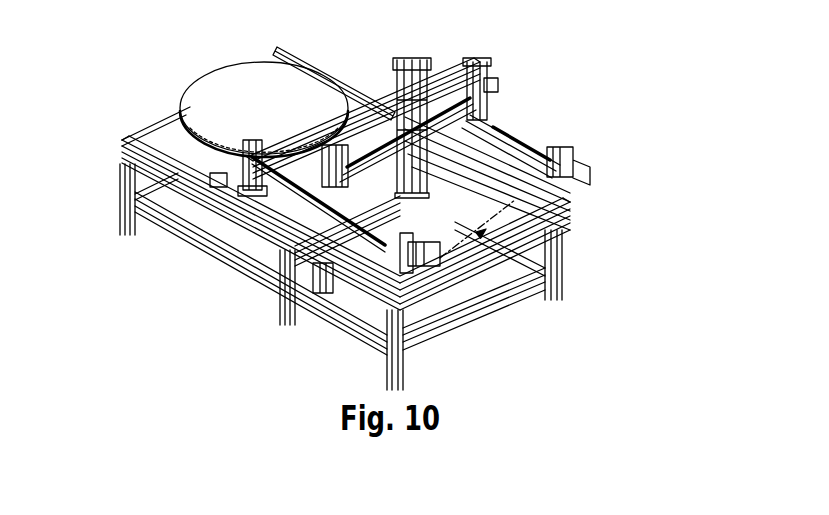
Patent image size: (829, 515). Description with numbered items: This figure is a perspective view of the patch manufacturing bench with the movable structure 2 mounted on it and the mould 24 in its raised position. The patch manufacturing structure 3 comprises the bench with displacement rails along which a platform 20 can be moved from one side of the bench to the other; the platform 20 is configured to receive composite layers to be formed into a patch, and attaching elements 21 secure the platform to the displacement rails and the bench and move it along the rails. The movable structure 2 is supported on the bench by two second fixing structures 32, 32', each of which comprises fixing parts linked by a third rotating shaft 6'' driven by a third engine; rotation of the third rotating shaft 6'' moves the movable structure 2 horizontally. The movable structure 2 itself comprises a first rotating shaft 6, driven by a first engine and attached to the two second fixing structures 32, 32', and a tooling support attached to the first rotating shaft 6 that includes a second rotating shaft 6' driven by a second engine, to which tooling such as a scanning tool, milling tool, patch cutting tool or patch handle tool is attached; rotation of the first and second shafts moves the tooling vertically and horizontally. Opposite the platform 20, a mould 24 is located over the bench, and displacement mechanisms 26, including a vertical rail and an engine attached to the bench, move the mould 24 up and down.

The movable structure 2 is at (476, 60).
The patch manufacturing structure 3 is at (308, 46).
The first rotating shaft 6 is at (535, 125).
The second rotating shaft 6' is at (537, 67).
The third rotating shaft 6'' is at (437, 244).
The platform 20 is at (240, 107).
The attaching elements 21 is at (143, 117).
The mould 24 is at (510, 280).
The displacement mechanisms 26 is at (430, 333).
The second fixing structure 32 is at (291, 218).
The second fixing structure 32' is at (412, 101).